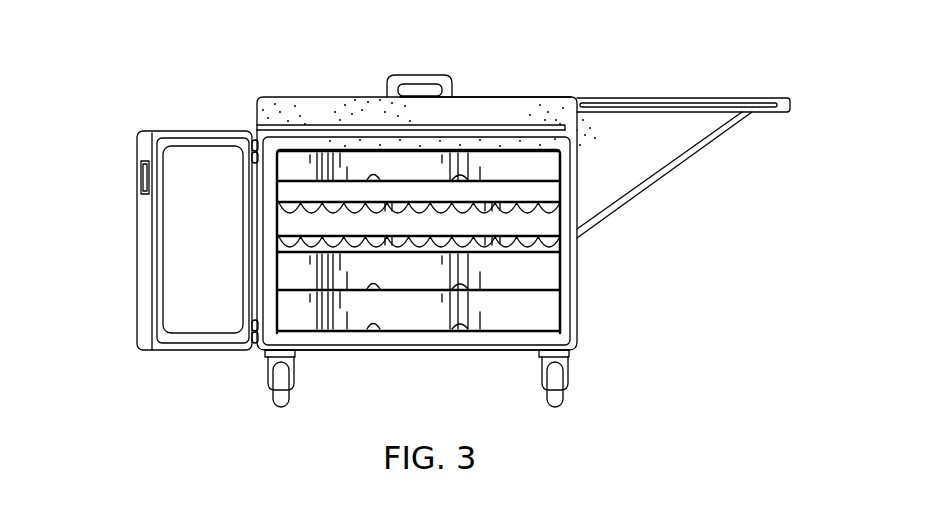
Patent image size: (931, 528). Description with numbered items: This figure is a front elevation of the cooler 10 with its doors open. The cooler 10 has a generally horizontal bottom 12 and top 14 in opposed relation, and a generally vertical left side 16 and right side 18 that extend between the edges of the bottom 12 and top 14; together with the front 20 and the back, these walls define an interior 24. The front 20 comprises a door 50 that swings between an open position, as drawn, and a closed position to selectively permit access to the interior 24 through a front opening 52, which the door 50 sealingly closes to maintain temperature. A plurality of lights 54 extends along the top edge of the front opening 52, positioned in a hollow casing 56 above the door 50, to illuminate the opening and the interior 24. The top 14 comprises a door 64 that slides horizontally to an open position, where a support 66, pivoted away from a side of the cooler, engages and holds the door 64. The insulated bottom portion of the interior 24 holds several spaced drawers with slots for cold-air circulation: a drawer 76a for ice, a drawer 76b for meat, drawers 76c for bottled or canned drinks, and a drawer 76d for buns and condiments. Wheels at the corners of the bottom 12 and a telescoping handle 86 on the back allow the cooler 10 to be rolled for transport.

The cooler 10 is at (641, 40).
The bottom 12 is at (420, 352).
The top 14 is at (312, 99).
The left side 16 is at (582, 318).
The right side 18 is at (257, 128).
The front 20 is at (505, 102).
The interior 24 is at (404, 219).
The door 50 is at (145, 149).
The front opening 52 is at (524, 324).
The lights 54 is at (312, 122).
The hollow casing 56 is at (378, 123).
The door 64 is at (687, 98).
The support 66 is at (667, 173).
The drawer 76a is at (304, 318).
The drawer 76b is at (368, 268).
The drawers 76c is at (293, 211).
The drawer 76d is at (298, 175).
The handle 86 is at (417, 75).